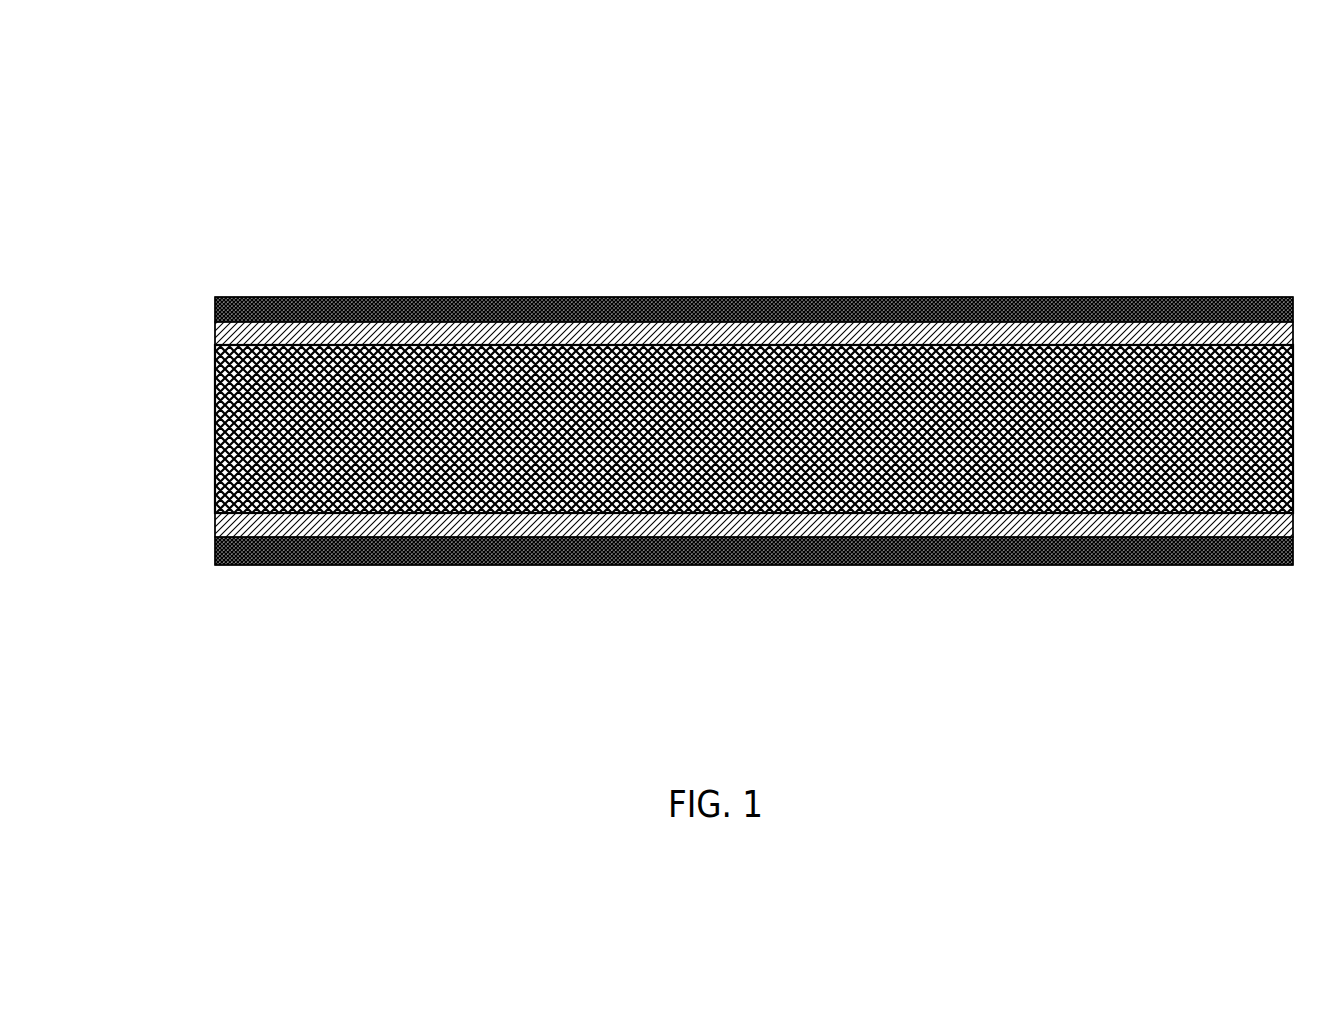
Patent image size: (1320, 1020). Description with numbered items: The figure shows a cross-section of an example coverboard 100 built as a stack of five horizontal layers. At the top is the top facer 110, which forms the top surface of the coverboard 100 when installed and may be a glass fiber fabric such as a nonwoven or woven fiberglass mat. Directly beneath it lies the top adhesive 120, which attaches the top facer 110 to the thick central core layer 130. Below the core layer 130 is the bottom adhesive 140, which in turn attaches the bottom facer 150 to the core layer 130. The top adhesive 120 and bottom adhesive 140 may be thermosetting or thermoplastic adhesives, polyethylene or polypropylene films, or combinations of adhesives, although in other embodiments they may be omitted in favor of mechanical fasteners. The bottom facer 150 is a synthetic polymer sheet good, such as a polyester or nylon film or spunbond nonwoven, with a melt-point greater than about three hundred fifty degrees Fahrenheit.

The coverboard 100 is at (208, 80).
The top facer 110 is at (215, 309).
The top adhesive 120 is at (215, 335).
The core layer 130 is at (215, 462).
The bottom adhesive 140 is at (215, 530).
The bottom facer 150 is at (214, 552).